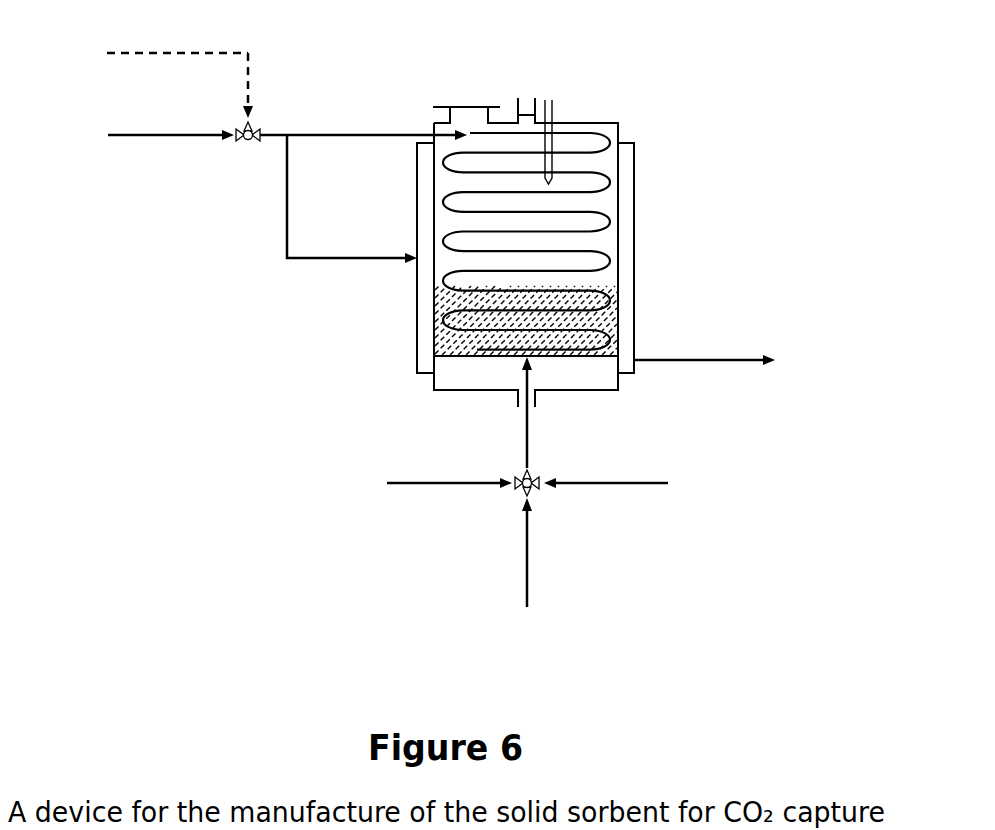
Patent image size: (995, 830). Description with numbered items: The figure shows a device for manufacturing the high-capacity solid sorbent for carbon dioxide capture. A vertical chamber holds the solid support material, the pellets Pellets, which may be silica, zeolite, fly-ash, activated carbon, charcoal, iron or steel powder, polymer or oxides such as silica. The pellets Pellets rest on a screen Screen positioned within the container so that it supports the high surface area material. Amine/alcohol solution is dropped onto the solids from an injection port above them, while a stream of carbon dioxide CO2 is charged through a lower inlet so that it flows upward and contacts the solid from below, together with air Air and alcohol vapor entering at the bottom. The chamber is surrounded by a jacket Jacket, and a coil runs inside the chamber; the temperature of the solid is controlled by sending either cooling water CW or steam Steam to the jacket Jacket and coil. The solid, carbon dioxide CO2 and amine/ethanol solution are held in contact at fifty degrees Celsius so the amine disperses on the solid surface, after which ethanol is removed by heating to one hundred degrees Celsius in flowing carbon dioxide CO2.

The jacket Jacket is at (635, 268).
The pellets Pellets is at (465, 345).
The screen Screen is at (573, 357).
The cooling water CW is at (154, 79).
The steam Steam is at (252, 192).
The carbon dioxide CO2 is at (422, 485).
The air Air is at (629, 482).